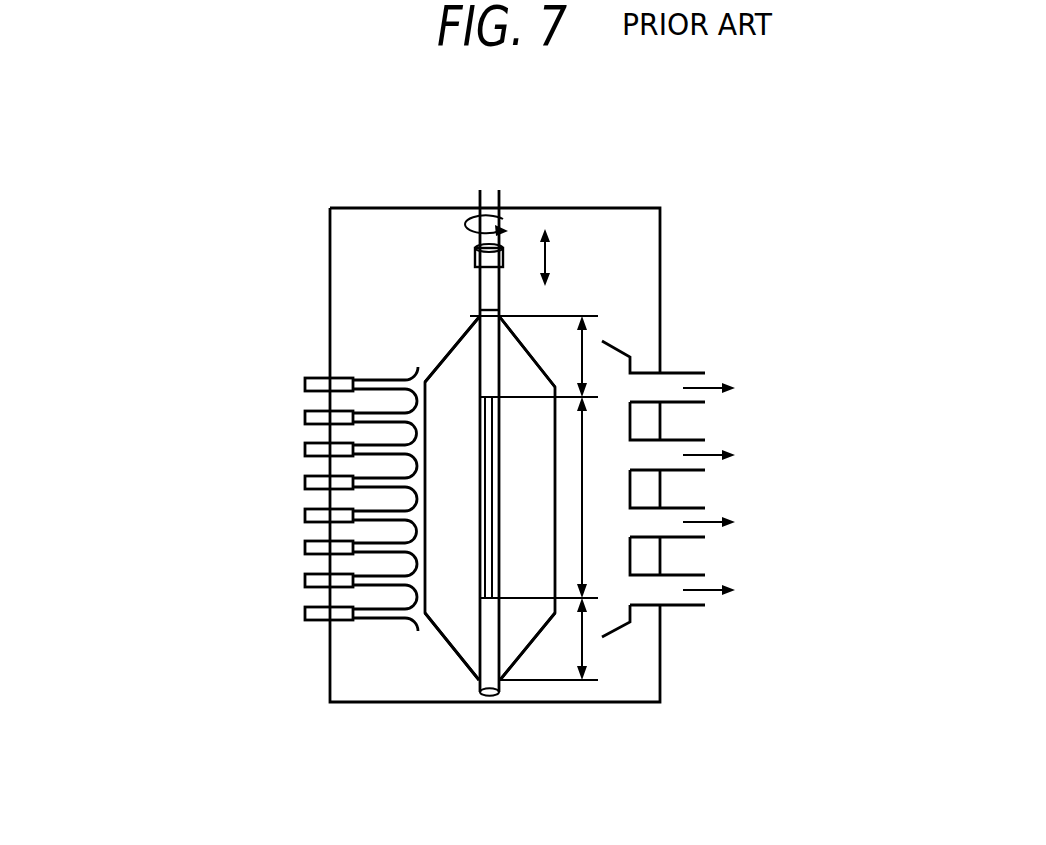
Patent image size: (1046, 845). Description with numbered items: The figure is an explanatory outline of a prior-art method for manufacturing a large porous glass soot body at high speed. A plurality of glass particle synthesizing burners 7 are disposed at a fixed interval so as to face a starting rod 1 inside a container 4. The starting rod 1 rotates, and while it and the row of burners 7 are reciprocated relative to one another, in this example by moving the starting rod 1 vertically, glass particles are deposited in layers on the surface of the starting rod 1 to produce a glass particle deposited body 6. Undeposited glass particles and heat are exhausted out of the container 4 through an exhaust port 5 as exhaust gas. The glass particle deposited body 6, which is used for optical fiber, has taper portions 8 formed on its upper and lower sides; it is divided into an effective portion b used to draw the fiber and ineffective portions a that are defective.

The starting rod 1 is at (480, 358).
The container 4 is at (660, 258).
The exhaust port 5 is at (678, 373).
The glass particle deposited body 6 is at (555, 533).
The glass particle synthesizing burners 7 is at (300, 372).
The taper portions 8 is at (520, 340).